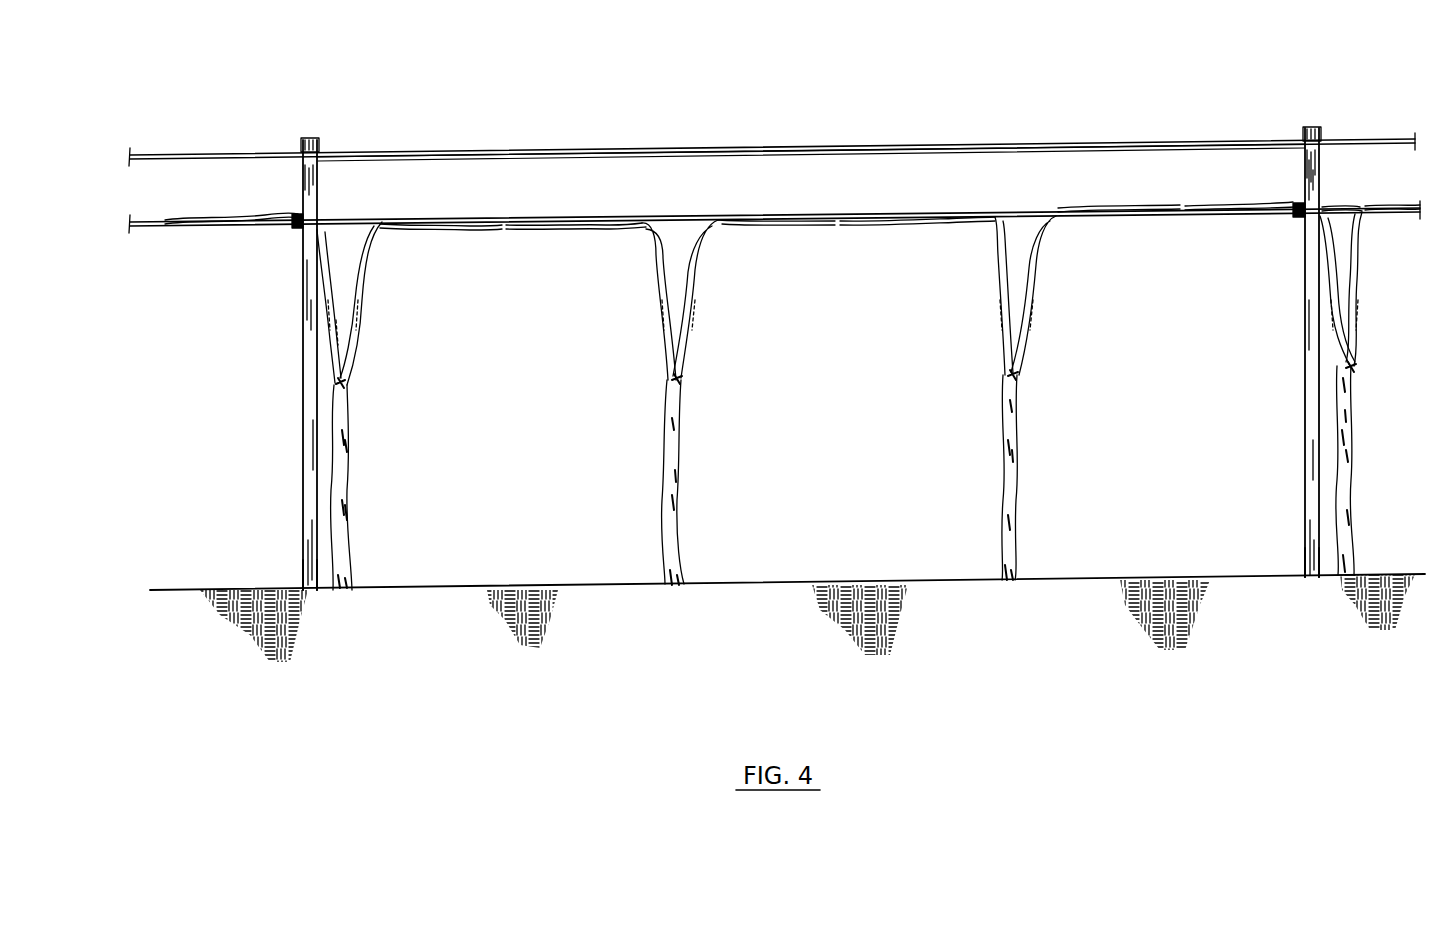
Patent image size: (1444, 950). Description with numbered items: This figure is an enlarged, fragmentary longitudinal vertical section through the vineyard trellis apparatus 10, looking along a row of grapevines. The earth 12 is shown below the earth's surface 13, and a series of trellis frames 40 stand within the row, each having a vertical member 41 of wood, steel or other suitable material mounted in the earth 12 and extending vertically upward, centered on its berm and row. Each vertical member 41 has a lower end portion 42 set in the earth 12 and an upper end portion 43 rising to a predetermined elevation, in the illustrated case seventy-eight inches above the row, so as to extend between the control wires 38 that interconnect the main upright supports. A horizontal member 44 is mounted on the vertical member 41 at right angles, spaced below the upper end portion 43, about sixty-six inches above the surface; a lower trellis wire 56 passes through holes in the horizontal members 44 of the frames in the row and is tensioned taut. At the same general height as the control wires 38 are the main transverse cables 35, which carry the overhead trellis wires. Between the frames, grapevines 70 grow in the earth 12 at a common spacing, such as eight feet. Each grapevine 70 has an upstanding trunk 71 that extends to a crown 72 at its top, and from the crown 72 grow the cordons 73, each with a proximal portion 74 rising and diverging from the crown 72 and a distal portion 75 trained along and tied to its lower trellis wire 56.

The apparatus 10 is at (1149, 106).
The earth 12 is at (1180, 580).
The earth's surface 13 is at (1065, 576).
The main transverse cable 35 is at (328, 159).
The control wire 38 is at (622, 150).
The trellis frame 40 is at (307, 138).
The vertical member 41 is at (303, 400).
The lower end portion 42 is at (304, 583).
The upper end portion 43 is at (303, 178).
The horizontal member 44 is at (294, 226).
The lower trellis wire 56 is at (690, 218).
The grapevine 70 is at (347, 447).
The trunk 71 is at (348, 495).
The crown 72 is at (343, 383).
The cordon 73 is at (350, 303).
The proximal portion 74 is at (330, 287).
The distal portion 75 is at (226, 214).